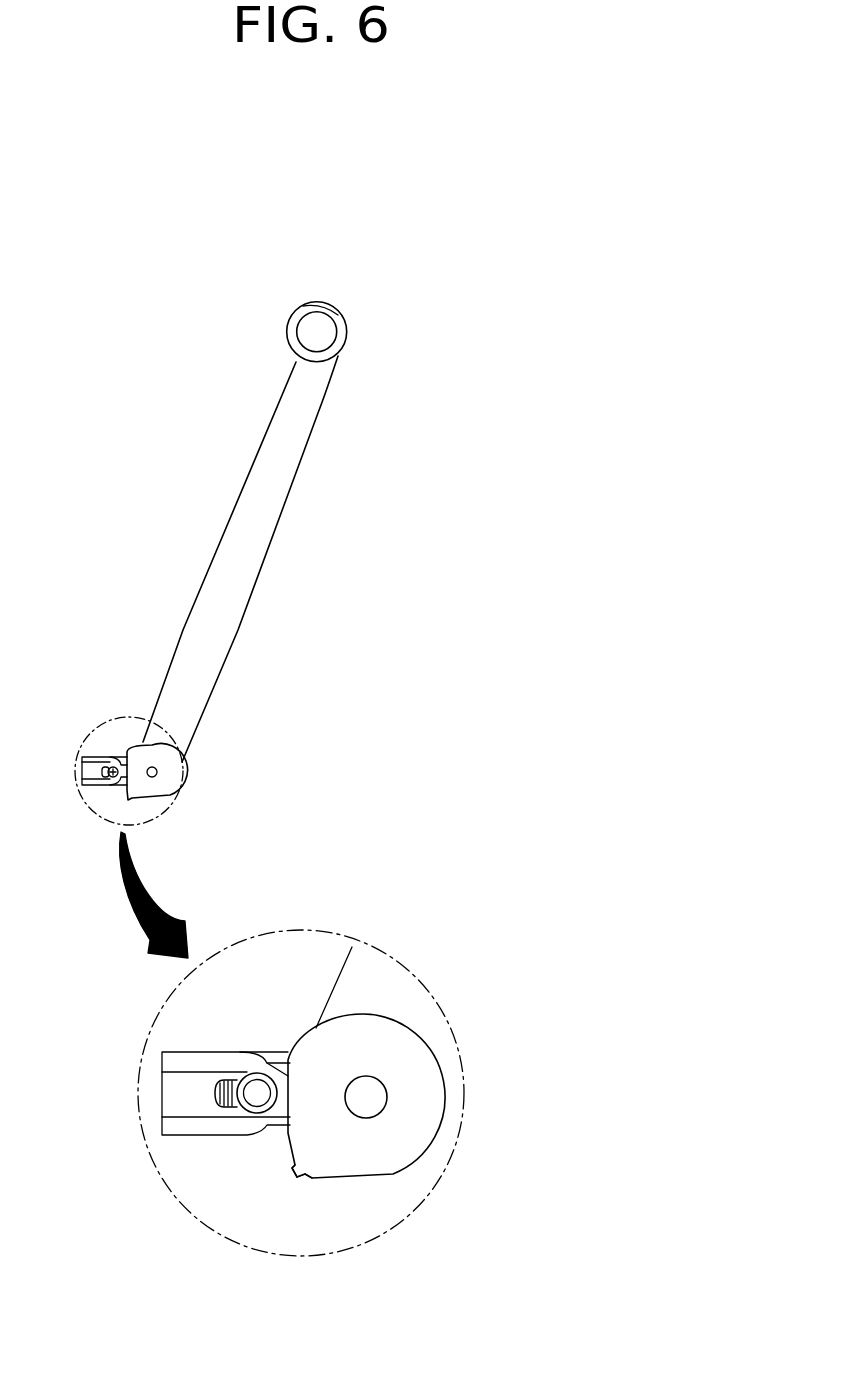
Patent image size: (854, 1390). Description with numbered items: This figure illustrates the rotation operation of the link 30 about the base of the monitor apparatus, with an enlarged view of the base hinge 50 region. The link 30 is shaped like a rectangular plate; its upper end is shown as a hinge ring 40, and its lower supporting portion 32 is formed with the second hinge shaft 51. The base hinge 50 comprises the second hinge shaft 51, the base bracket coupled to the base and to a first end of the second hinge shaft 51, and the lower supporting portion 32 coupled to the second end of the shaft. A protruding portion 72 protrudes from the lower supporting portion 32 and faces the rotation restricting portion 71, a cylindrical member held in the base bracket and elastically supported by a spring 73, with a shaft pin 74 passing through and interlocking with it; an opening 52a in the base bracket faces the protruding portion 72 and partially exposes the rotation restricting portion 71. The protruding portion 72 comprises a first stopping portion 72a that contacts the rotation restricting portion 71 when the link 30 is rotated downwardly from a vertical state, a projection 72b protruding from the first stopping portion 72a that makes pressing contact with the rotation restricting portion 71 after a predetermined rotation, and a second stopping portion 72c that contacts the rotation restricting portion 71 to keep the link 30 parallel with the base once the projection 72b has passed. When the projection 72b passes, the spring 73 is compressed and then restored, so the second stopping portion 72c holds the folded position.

The link 30 is at (223, 535).
The lower supporting portion 32 is at (420, 1135).
The pivot ring 40 is at (284, 302).
The base hinge 50 is at (138, 735).
The second hinge shaft 51 is at (388, 1090).
The opening 52a is at (288, 1060).
The rotation restricting portion 71 is at (250, 1128).
The protruding portion 72 is at (296, 1260).
The first stopping portion 72a is at (290, 1165).
The projection 72b is at (297, 1178).
The second stopping portion 72c is at (310, 1178).
The spring 73 is at (217, 1097).
The shaft pin 74 is at (217, 1082).